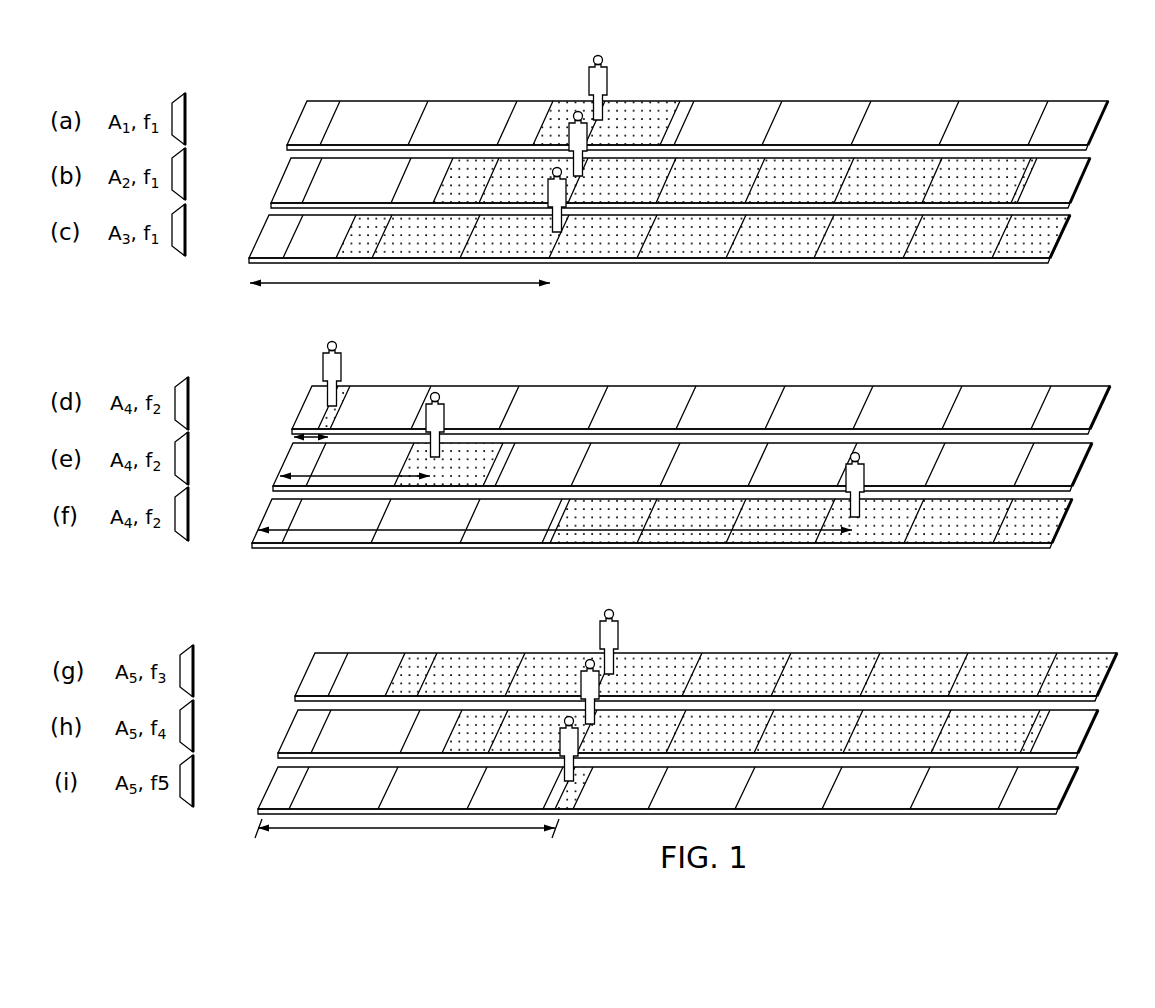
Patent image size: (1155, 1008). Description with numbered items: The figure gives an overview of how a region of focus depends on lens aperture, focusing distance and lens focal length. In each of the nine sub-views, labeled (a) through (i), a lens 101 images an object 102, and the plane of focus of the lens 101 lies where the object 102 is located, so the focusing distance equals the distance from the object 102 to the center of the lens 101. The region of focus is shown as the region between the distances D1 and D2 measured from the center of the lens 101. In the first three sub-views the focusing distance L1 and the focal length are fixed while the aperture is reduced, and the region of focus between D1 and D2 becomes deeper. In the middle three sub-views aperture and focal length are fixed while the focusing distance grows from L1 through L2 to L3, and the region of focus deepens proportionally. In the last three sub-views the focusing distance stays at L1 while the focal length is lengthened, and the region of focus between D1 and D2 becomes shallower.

The lens 101 is at (174, 101).
The object 102 is at (607, 86).
The focusing distance L1 is at (264, 452).
The focusing distance L2 is at (355, 460).
The focusing distance L3 is at (555, 516).
The near distance of region of focus D1 is at (409, 455).
The far distance of region of focus D2 is at (749, 455).